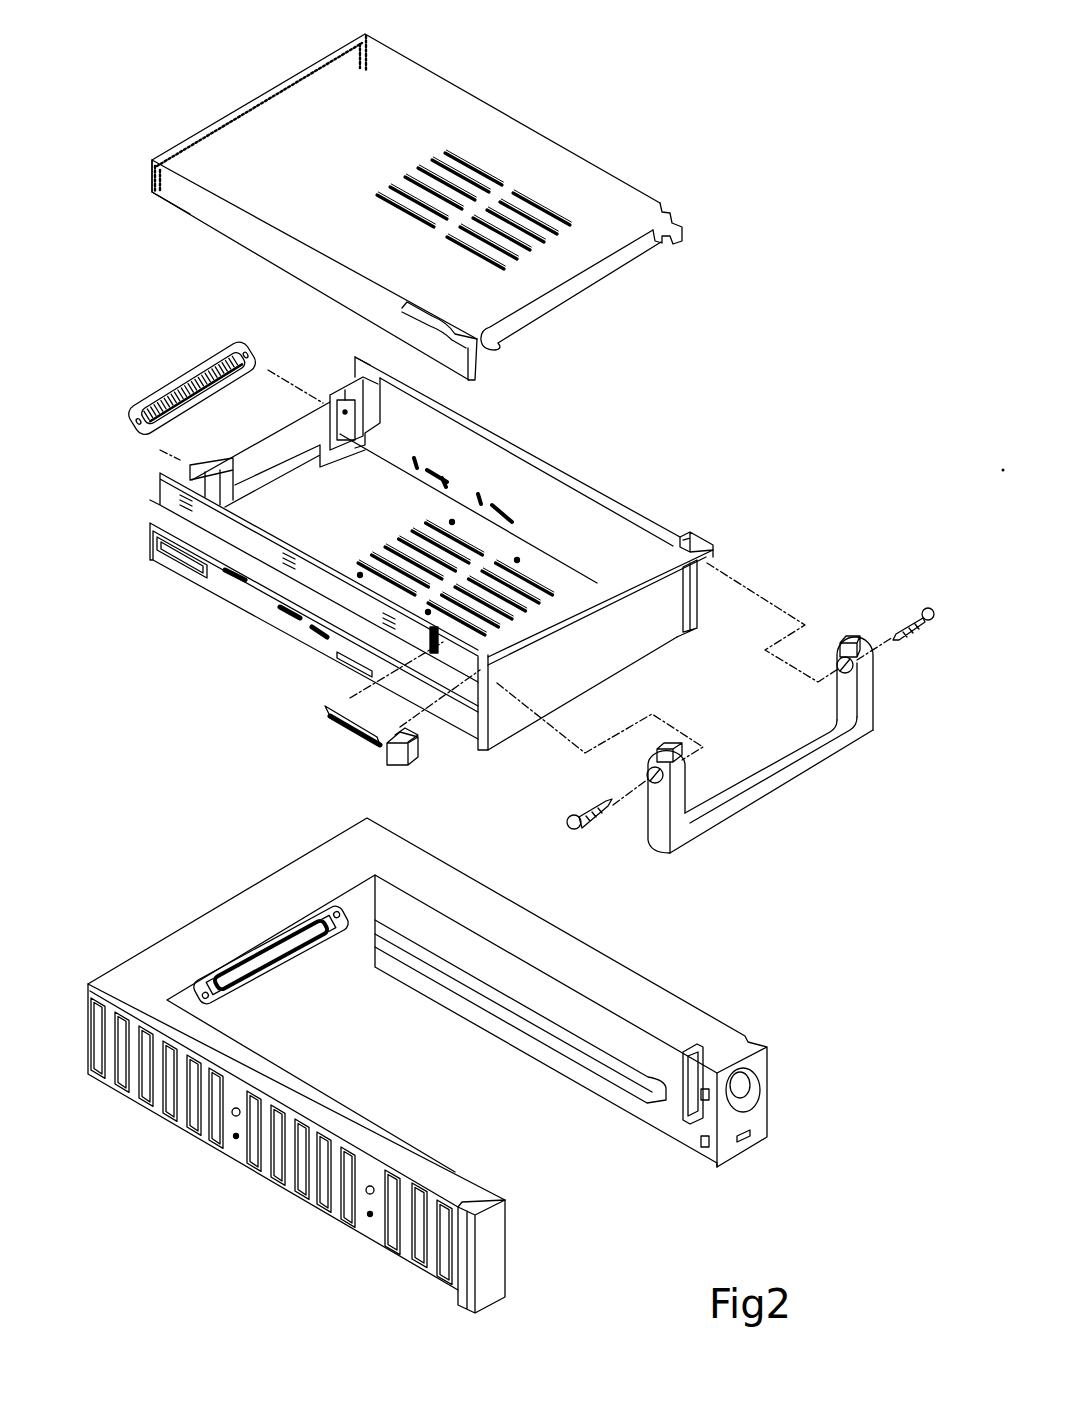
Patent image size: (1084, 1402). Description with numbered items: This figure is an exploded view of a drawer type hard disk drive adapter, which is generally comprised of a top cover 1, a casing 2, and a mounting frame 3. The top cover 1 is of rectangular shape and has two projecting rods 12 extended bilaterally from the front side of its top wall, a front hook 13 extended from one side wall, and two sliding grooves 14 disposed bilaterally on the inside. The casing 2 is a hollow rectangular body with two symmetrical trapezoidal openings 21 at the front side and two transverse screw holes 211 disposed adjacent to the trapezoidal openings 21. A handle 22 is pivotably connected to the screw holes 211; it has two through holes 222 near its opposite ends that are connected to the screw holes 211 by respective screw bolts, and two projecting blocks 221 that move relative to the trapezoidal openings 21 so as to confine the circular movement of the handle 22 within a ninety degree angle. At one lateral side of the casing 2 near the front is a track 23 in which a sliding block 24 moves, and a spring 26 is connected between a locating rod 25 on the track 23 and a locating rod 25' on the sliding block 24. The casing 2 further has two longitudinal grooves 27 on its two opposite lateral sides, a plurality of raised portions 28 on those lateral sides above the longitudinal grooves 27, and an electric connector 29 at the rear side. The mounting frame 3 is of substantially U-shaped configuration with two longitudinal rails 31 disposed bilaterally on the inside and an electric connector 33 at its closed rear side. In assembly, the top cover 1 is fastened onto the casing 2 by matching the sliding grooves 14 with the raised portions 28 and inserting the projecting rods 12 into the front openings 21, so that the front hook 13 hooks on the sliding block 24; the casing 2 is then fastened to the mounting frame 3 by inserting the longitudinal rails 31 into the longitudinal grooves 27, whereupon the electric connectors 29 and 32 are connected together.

The top cover 1 is at (477, 107).
The projecting rods 12 is at (683, 228).
The front hook 13 is at (470, 367).
The sliding grooves 14 is at (148, 172).
The casing 2 is at (547, 460).
The trapezoidal openings 21 is at (683, 540).
The transverse screw holes 211 is at (515, 676).
The handle 22 is at (763, 793).
The projecting blocks 221 is at (845, 637).
The through holes 222 is at (648, 780).
The track 23 is at (483, 693).
The sliding block 24 is at (390, 753).
The locating rod 25 is at (320, 670).
The locating rod 25' is at (430, 746).
The spring 26 is at (337, 723).
The longitudinal grooves 27 is at (170, 517).
The raised portions 28 is at (277, 550).
The electric connector 29 is at (205, 365).
The mounting frame 3 is at (160, 942).
The longitudinal rails 31 is at (513, 1010).
The electric connector 32 is at (288, 932).
The electric connector 33 is at (273, 988).